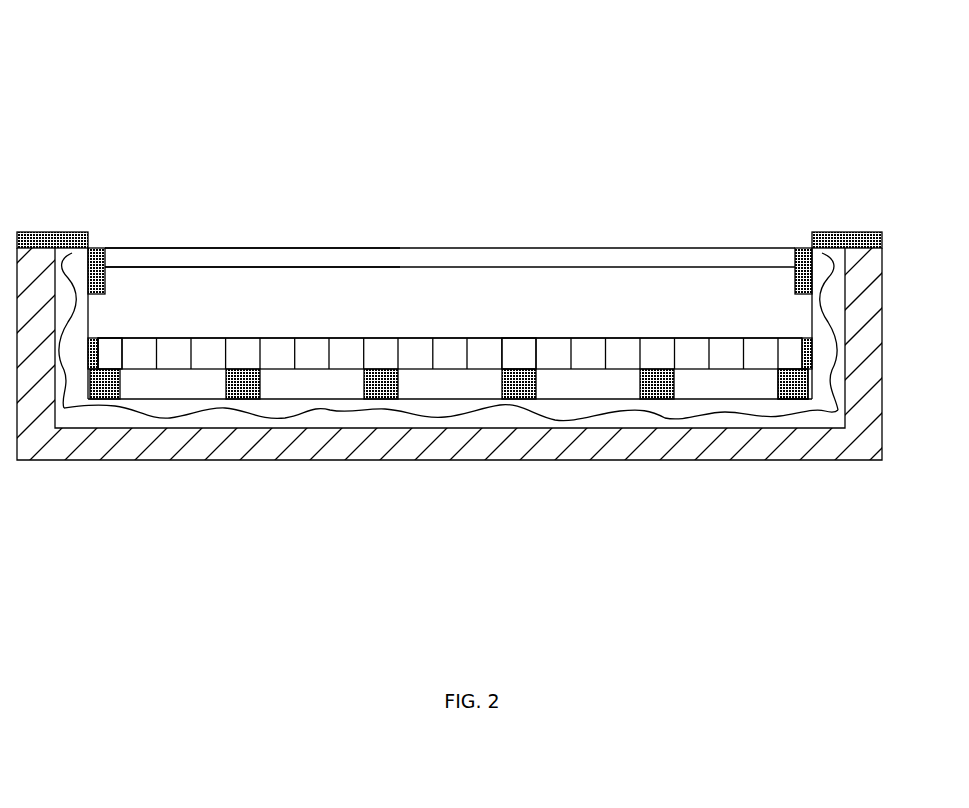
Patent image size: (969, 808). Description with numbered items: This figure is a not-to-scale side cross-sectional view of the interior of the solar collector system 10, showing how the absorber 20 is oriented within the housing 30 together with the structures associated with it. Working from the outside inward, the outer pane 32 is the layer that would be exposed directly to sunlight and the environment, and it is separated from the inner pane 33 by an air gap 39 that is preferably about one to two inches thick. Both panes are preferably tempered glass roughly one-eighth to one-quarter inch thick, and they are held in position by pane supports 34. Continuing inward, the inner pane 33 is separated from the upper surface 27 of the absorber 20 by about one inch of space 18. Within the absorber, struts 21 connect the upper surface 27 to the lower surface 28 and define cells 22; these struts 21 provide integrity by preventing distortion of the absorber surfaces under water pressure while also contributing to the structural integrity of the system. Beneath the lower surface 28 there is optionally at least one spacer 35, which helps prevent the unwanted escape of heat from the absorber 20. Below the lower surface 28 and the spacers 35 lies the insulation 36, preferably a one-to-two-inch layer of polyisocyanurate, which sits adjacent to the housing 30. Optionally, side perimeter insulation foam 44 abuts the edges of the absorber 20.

The electronic device assembly 10 is at (180, 80).
The space 18 is at (603, 312).
The absorber 20 is at (383, 330).
The struts 21 is at (296, 350).
The cells 22 is at (513, 355).
The upper surface 27 is at (448, 337).
The lower surface 28 is at (559, 372).
The housing 30 is at (218, 443).
The outer pane 32 is at (680, 248).
The inner pane 33 is at (249, 272).
The pane supports 34 is at (107, 248).
The spacer 35 is at (793, 398).
The insulation 36 is at (393, 414).
The air gap 39 is at (142, 251).
The side perimeter insulation foam 44 is at (95, 340).